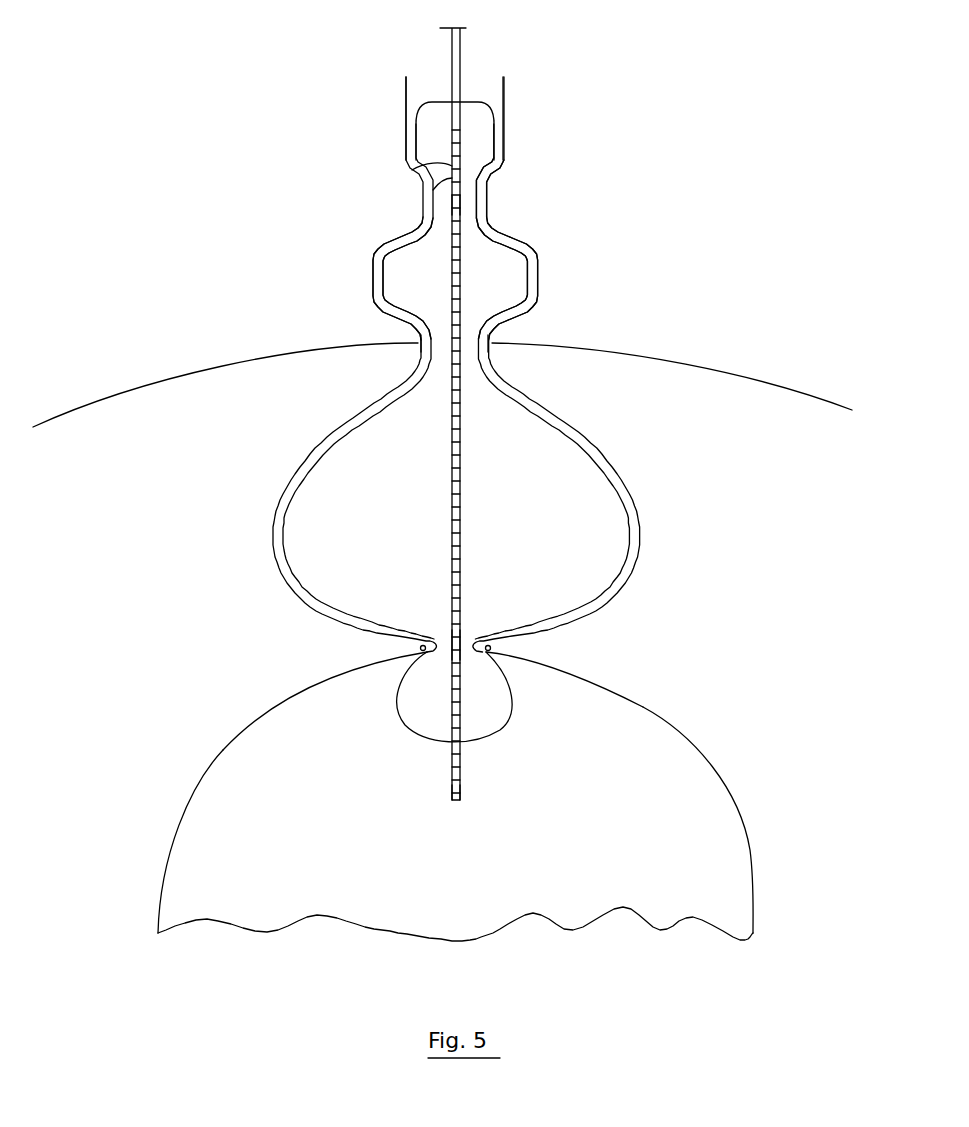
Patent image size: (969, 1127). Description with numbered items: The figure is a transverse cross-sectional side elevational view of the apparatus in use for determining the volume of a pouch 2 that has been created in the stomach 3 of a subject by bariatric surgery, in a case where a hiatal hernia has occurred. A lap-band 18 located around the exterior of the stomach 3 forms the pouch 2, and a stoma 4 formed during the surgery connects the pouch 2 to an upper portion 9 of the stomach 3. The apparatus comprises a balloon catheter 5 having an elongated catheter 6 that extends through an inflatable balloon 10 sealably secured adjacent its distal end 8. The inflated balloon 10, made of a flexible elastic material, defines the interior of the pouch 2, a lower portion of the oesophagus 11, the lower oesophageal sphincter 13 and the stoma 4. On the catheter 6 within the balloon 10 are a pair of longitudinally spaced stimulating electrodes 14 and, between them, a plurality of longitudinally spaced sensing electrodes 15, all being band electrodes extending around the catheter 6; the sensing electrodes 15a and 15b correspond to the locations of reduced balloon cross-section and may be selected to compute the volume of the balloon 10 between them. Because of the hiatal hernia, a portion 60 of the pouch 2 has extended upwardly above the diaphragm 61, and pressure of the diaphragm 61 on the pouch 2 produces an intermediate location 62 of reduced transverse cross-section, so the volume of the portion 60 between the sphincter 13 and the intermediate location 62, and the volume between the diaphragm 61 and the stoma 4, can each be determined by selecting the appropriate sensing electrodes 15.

The pouch 2 is at (373, 280).
The stomach 3 is at (668, 760).
The stoma 4 is at (420, 653).
The balloon catheter 5 is at (491, 41).
The catheter 6 is at (459, 130).
The distal end 8 is at (462, 800).
The upper portion of the stomach 9 is at (613, 690).
The balloon 10 is at (526, 248).
The oesophagus 11 is at (503, 86).
The lower oesophageal sphincter 13 is at (488, 187).
The stimulating electrodes 14 is at (451, 123).
The sensing electrodes 15 is at (417, 167).
The sensing electrode 15a is at (457, 643).
The sensing electrode 15b is at (453, 207).
The lap-band 18 is at (492, 648).
The portion of the pouch 60 is at (540, 277).
The diaphragm 61 is at (197, 370).
The intermediate location 62 is at (425, 350).